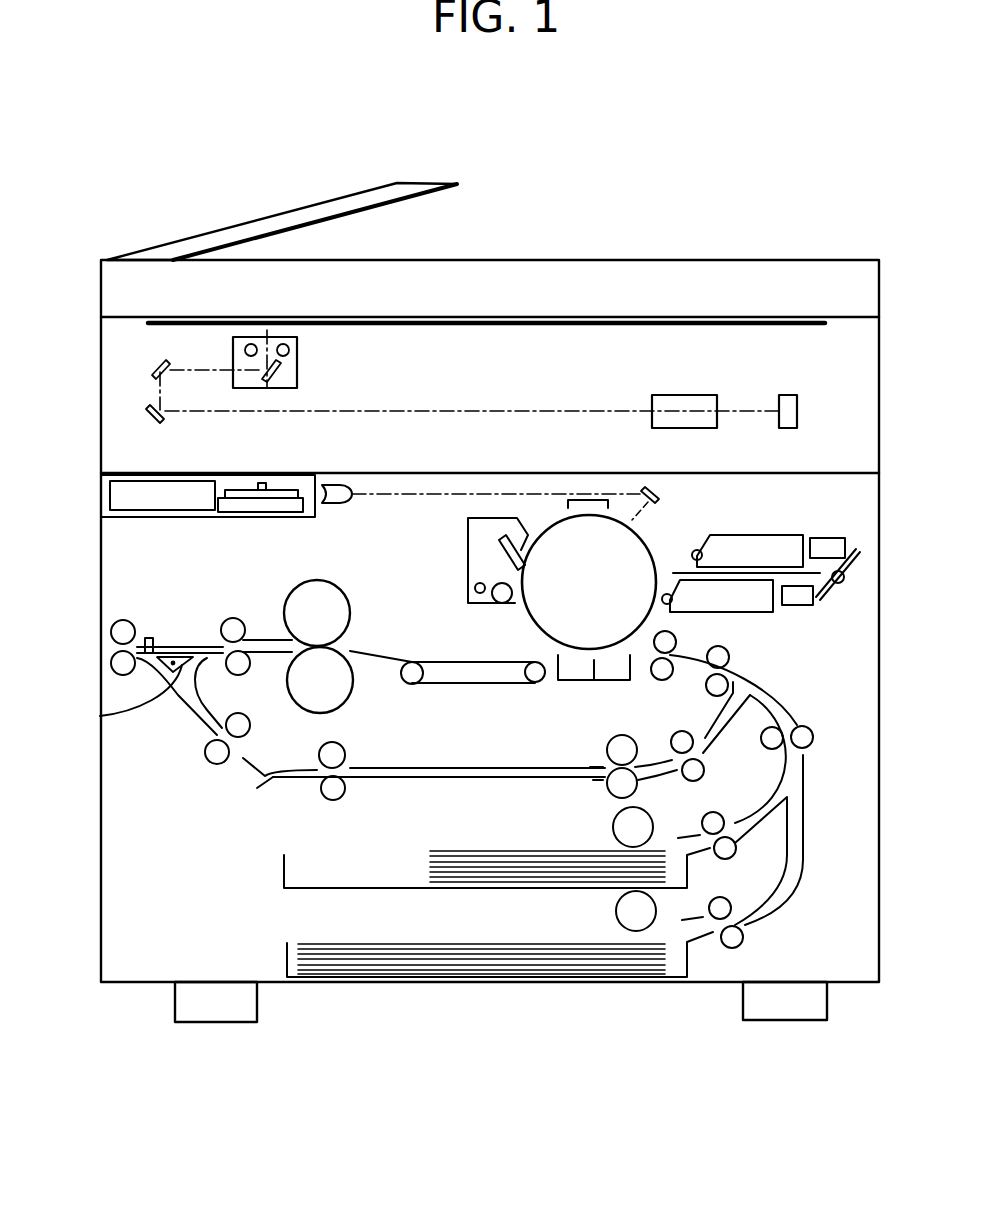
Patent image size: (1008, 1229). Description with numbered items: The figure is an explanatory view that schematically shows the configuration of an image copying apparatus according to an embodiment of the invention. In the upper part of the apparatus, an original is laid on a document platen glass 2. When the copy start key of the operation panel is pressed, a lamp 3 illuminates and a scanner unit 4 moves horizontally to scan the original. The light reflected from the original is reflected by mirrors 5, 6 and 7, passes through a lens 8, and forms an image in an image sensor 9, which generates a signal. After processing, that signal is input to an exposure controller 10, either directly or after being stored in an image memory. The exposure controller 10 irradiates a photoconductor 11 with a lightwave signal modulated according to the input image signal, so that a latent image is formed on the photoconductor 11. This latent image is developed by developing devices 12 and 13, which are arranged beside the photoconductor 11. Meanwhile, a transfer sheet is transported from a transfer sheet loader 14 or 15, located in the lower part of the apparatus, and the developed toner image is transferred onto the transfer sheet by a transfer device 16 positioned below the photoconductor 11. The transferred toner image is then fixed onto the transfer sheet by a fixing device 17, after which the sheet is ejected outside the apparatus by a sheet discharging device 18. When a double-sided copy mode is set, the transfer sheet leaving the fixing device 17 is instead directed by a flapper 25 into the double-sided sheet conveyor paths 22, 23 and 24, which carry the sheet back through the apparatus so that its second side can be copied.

The document platen glass 2 is at (727, 318).
The lamp 3 is at (284, 343).
The scanner unit 4 is at (298, 350).
The mirror 5 is at (285, 375).
The mirror 6 is at (152, 364).
The mirror 7 is at (148, 412).
The lens 8 is at (700, 396).
The image sensor 9 is at (800, 396).
The exposure controller 10 is at (240, 483).
The photoconductor 11 is at (553, 528).
The developing device 12 is at (750, 543).
The developing device 13 is at (748, 600).
The transfer sheet loader 14 is at (680, 870).
The transfer sheet loader 15 is at (680, 967).
The transfer device 16 is at (608, 683).
The fixing device 17 is at (345, 665).
The sheet discharging device 18 is at (112, 660).
The double-sided sheet conveyor path 22 is at (187, 718).
The double-sided sheet conveyor path 23 is at (297, 778).
The double-sided sheet conveyor path 24 is at (507, 778).
The flapper 25 is at (100, 716).